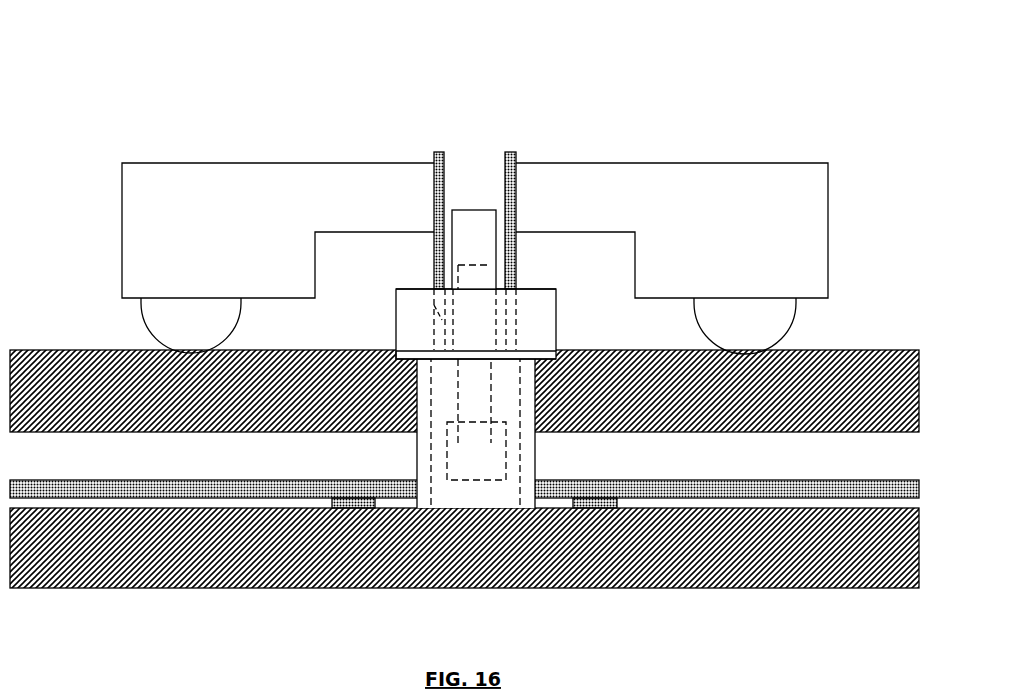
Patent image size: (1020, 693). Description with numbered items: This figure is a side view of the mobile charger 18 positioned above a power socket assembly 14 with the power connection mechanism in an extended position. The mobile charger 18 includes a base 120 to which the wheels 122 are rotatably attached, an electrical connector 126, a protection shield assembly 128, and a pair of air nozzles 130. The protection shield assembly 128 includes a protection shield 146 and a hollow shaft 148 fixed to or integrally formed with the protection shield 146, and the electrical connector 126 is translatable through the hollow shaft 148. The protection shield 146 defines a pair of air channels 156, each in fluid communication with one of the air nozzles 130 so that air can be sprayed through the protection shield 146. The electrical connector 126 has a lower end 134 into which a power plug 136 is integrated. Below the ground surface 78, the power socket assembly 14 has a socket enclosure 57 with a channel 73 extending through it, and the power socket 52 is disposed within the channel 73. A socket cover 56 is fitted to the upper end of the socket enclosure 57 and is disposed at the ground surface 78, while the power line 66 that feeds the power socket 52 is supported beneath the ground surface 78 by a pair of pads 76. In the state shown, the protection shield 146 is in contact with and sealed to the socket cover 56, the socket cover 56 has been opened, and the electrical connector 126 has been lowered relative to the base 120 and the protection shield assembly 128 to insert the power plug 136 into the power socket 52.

The mobile charger 18 is at (142, 77).
The power socket assembly 14 is at (341, 331).
The base 120 is at (815, 184).
The wheels 122 is at (168, 313).
The electrical connector 126 is at (458, 258).
The air nozzles 130 is at (434, 263).
The lower end 134 is at (475, 262).
The hollow shaft 148 is at (475, 209).
The protection shield 146 is at (540, 300).
The protection shield assembly 128 is at (557, 312).
The air channels 156 is at (440, 312).
The socket cover 56 is at (397, 350).
The ground surface 78 is at (621, 349).
The power plug 136 is at (465, 426).
The socket enclosure 57 is at (417, 451).
The power socket 52 is at (465, 453).
The channel 73 is at (521, 449).
The pads 76 is at (352, 482).
The power line 66 is at (113, 480).